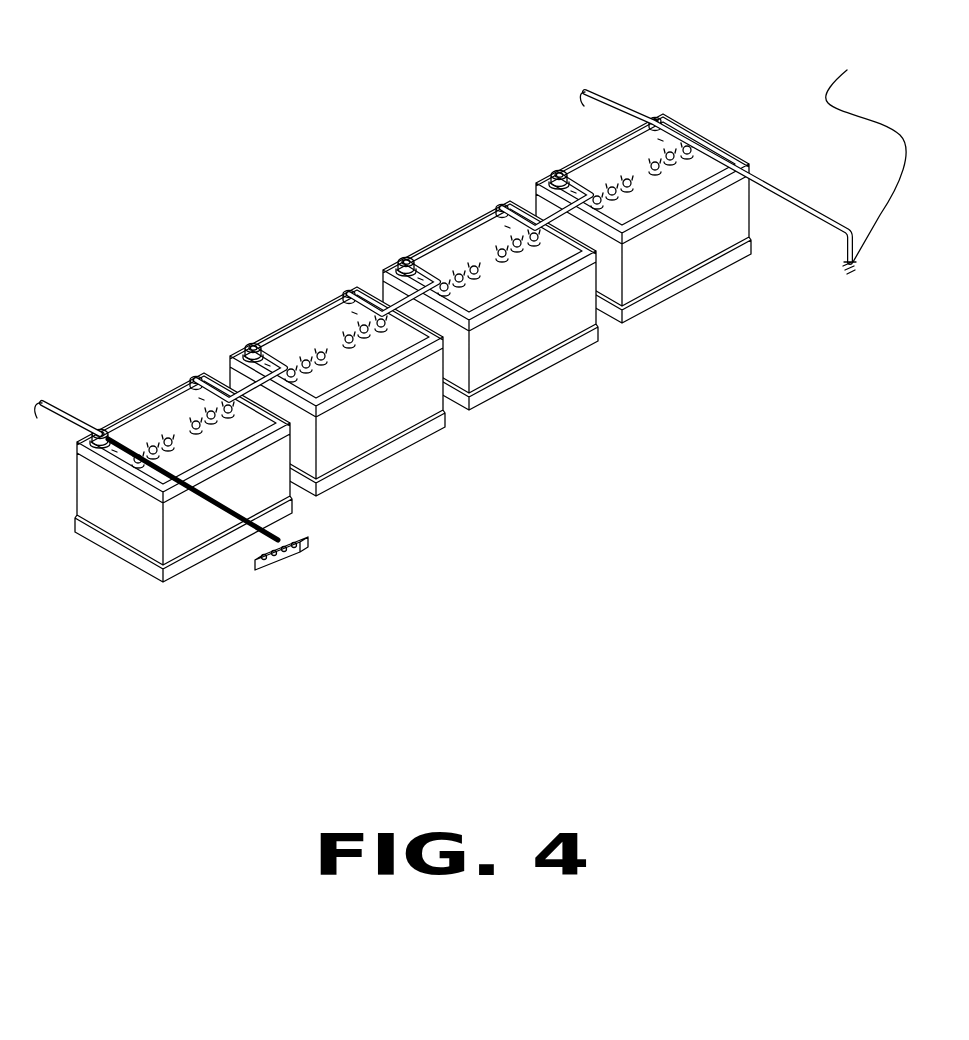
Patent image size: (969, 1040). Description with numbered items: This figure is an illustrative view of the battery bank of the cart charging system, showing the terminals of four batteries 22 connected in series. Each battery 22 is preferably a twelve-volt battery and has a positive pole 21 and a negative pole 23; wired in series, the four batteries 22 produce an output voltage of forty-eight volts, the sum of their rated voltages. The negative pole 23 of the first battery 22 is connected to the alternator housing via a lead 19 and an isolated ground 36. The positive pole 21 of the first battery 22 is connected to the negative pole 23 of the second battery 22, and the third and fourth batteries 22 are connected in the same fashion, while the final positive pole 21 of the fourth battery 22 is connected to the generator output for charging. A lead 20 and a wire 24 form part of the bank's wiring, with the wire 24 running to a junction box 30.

The lead 19 is at (598, 95).
The lead 20 is at (52, 392).
The positive pole 21 is at (560, 168).
The battery 22 is at (693, 257).
The negative pole 23 is at (648, 116).
The wire 24 is at (548, 170).
The junction box 30 is at (250, 563).
The ground 36 is at (866, 156).